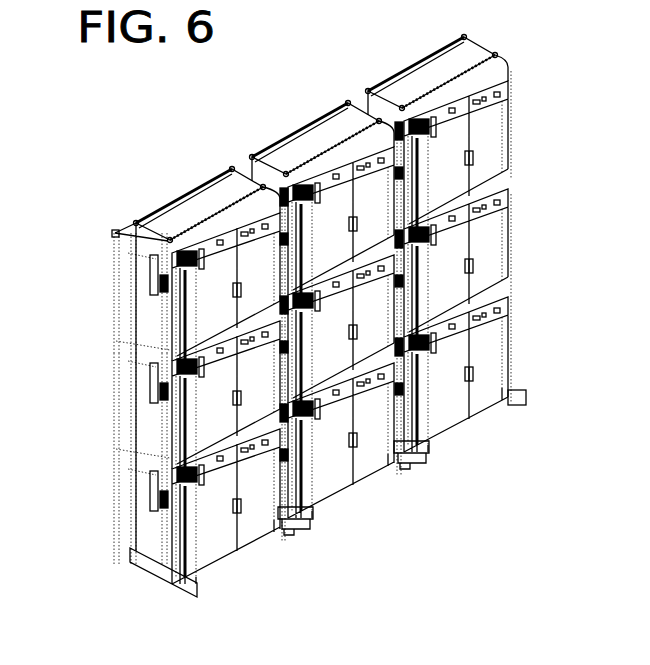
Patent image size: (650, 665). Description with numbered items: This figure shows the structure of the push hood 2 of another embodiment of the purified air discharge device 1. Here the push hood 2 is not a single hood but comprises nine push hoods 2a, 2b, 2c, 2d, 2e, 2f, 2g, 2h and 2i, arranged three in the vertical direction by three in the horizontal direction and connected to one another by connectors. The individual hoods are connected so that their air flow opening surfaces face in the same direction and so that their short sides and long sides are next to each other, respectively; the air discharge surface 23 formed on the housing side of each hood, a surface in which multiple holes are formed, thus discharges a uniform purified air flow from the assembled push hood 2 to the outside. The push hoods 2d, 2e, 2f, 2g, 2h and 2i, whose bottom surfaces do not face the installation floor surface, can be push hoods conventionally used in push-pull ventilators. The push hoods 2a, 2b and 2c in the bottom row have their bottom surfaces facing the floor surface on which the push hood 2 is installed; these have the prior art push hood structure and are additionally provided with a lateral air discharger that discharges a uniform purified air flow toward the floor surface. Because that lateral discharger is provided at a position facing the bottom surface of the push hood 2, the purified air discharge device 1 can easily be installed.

The purified air discharge device 1 is at (521, 77).
The push hood 2 is at (536, 114).
The push hood 2a is at (258, 508).
The push hood 2b is at (358, 475).
The push hood 2c is at (480, 407).
The push hood 2d is at (205, 407).
The push hood 2e is at (332, 342).
The push hood 2f is at (502, 230).
The push hood 2g is at (182, 230).
The push hood 2h is at (309, 143).
The push hood 2i is at (402, 96).
The air discharge surface 23 is at (428, 55).